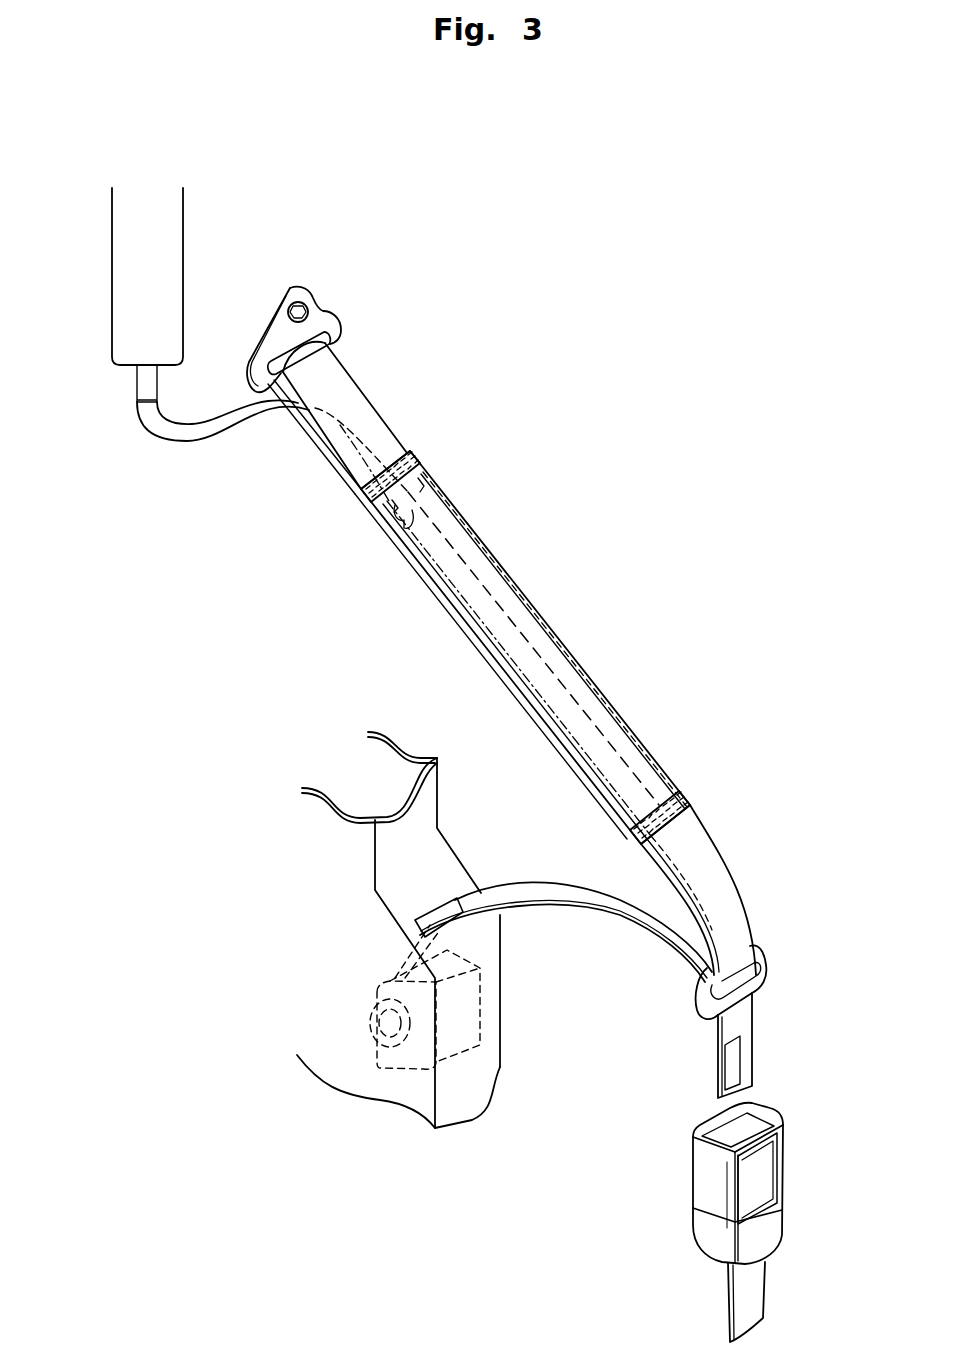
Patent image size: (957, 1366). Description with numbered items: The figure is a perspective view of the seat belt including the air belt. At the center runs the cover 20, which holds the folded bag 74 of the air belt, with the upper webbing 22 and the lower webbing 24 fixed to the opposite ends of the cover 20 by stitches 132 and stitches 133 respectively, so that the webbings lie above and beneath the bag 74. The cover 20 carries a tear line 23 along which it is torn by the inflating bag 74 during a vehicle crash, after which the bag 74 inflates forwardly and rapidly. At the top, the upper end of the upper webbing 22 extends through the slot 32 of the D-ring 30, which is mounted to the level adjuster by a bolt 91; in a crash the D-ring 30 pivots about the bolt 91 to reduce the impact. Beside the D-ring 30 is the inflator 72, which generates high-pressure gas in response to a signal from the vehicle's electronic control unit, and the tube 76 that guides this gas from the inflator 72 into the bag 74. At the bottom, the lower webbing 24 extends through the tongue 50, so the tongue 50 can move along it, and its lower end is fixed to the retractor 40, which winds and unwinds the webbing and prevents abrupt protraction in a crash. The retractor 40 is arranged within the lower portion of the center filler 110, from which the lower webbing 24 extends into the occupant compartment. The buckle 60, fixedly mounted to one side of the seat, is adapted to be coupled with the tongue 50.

The cover 20 is at (578, 657).
The upper webbing 22 is at (342, 406).
The tear line 23 is at (595, 738).
The lower webbing 24 is at (715, 853).
The D-ring 30 is at (325, 312).
The slot 32 is at (327, 340).
The retractor 40 is at (386, 1025).
The tongue 50 is at (762, 979).
The buckle 60 is at (755, 1183).
The inflator 72 is at (112, 225).
The bag 74 is at (432, 548).
The tube 76 is at (158, 439).
The bolt 91 is at (300, 302).
The center filler 110 is at (440, 790).
The stitches 132 is at (420, 470).
The stitches 133 is at (660, 796).